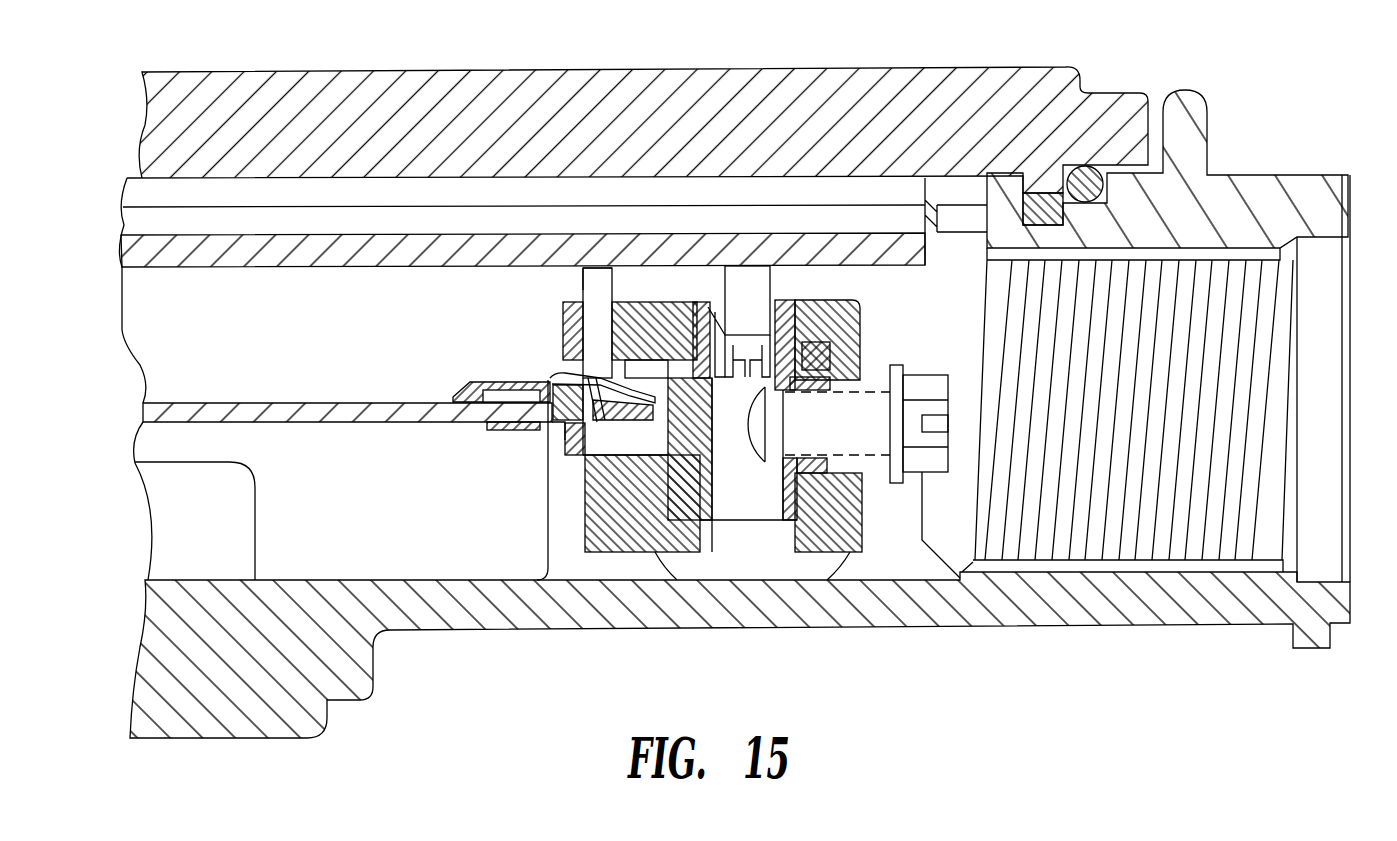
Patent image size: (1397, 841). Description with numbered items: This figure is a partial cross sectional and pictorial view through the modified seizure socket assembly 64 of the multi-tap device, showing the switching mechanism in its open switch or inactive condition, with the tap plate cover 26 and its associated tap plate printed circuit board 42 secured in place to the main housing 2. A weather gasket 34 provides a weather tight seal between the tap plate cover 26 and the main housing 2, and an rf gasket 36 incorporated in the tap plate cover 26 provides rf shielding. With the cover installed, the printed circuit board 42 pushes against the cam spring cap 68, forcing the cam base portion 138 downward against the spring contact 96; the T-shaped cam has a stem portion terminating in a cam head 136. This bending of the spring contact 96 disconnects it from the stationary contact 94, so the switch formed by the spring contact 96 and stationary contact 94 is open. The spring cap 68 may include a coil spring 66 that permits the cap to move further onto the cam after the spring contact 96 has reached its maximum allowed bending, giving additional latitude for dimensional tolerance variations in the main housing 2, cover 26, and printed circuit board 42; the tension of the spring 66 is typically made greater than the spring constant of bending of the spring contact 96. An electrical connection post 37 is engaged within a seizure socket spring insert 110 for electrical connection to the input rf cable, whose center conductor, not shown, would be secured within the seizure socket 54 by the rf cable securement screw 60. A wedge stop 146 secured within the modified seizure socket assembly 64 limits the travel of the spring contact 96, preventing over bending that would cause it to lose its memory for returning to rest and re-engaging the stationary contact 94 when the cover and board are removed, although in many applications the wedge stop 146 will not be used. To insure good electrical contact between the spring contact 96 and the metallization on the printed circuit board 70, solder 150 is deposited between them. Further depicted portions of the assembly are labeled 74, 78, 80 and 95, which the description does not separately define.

The main housing 2 is at (1252, 185).
The tap plate cover 26 is at (990, 74).
The weather gasket 34 is at (1092, 172).
The rf gasket 36 is at (1040, 190).
The electrical connection post 37 is at (760, 287).
The tap plate printed circuit board 42 is at (290, 270).
The seizure socket 54 is at (716, 504).
The rf cable securement screw 60 is at (915, 378).
The modified seizure socket assembly 64 is at (572, 475).
The coil spring 66 is at (583, 268).
The cam spring cap 68 is at (578, 268).
The printed circuit board 70 is at (345, 400).
The fastener 74 is at (495, 432).
The bushing 78 is at (560, 325).
The block 80 is at (572, 514).
The stationary contact 94 is at (700, 392).
The insert 95 is at (800, 352).
The spring contact 96 is at (652, 422).
The seizure socket spring insert 110 is at (745, 372).
The cam head 136 is at (618, 272).
The cam base portion 138 is at (594, 354).
The wedge stop 146 is at (562, 428).
The solder 150 is at (517, 380).